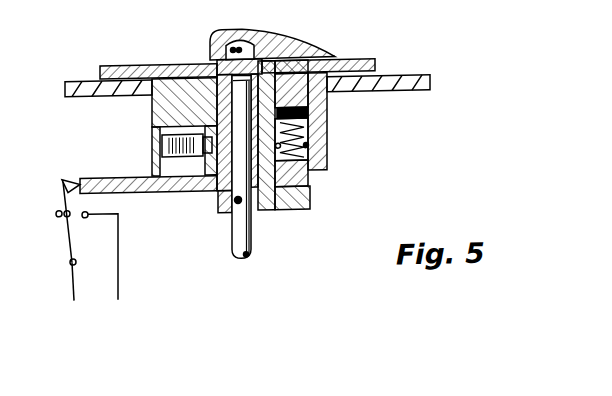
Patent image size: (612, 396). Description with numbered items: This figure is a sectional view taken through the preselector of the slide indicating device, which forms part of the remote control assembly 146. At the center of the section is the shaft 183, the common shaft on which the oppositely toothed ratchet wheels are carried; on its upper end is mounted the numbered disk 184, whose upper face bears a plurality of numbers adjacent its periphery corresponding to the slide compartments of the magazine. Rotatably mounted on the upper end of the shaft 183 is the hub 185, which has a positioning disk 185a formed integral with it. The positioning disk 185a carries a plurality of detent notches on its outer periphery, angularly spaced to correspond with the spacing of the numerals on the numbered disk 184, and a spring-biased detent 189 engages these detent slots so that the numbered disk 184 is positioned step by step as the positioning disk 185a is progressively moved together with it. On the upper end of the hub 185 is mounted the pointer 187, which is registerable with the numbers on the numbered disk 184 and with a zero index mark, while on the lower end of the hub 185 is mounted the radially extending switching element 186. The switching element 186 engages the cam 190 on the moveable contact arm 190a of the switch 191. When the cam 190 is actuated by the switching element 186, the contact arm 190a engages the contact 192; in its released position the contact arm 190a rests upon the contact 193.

The remote control assembly 146 is at (395, 91).
The shaft 183 is at (252, 243).
The numbered disk 184 is at (187, 82).
The hub 185 is at (278, 184).
The positioning disk 185a is at (203, 196).
The switching element 186 is at (107, 180).
The pointer 187 is at (287, 53).
The spring-biased detent 189 is at (316, 151).
The cam 190 is at (77, 184).
The moveable contact arm 190a is at (68, 240).
The switch 191 is at (70, 264).
The contact 192 is at (57, 217).
The contact 193 is at (91, 215).